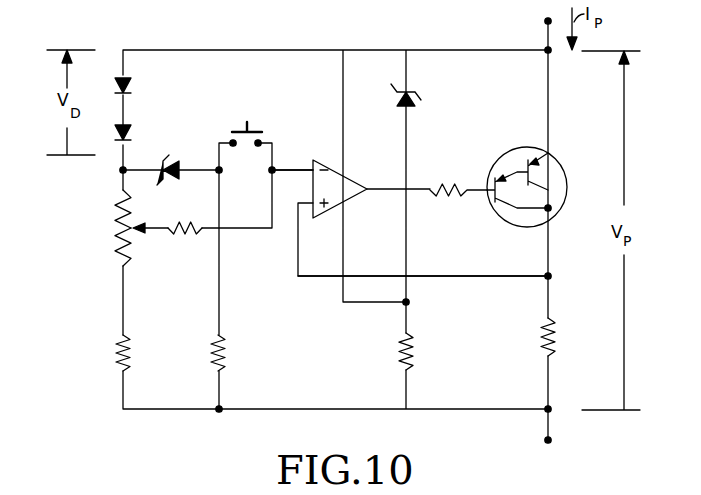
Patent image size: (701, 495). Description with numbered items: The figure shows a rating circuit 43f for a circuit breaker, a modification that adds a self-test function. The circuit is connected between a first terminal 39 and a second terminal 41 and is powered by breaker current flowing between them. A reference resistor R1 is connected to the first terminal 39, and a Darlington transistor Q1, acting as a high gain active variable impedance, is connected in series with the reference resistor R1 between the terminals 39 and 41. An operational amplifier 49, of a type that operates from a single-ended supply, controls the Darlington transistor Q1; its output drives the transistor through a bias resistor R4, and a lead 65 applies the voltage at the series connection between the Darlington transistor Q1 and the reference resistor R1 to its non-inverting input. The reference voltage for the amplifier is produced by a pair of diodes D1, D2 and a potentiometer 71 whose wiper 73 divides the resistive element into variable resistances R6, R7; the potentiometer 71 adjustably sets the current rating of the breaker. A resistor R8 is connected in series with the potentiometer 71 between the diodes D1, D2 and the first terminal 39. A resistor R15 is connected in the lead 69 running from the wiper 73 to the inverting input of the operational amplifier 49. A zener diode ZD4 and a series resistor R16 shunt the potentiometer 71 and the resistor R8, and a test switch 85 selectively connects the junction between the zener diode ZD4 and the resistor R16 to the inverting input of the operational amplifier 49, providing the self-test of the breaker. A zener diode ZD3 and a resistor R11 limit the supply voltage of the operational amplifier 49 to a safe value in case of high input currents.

The rating circuit 43f is at (320, 26).
The diode D1 is at (131, 88).
The diode D2 is at (131, 136).
The zener diode ZD4 is at (170, 152).
The test switch 85 is at (250, 126).
The lead 69 is at (293, 170).
The operational amplifier 49 is at (346, 177).
The zener diode ZD3 is at (415, 105).
The bias resistor R4 is at (438, 185).
The Darlington transistor Q1 is at (493, 210).
The second terminal 41 is at (545, 21).
The variable resistance R6 is at (116, 204).
The variable resistance R7 is at (116, 254).
The potentiometer 71 is at (110, 228).
The wiper 73 is at (142, 234).
The resistor R15 is at (173, 222).
The lead 65 is at (432, 276).
The resistor R8 is at (116, 362).
The series resistor R16 is at (225, 357).
The resistor R11 is at (414, 356).
The reference resistor R1 is at (556, 340).
The first terminal 39 is at (551, 441).